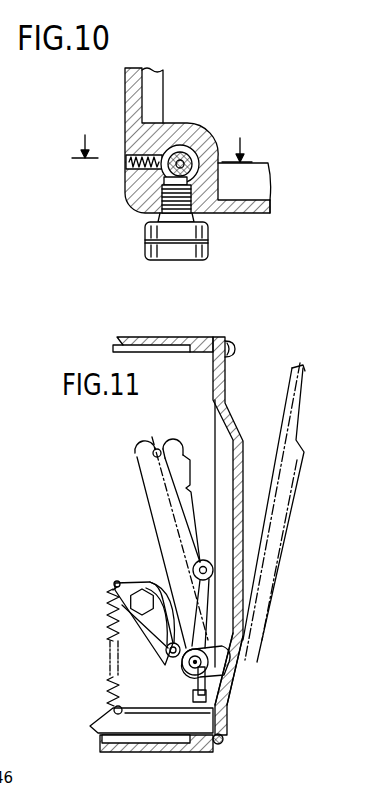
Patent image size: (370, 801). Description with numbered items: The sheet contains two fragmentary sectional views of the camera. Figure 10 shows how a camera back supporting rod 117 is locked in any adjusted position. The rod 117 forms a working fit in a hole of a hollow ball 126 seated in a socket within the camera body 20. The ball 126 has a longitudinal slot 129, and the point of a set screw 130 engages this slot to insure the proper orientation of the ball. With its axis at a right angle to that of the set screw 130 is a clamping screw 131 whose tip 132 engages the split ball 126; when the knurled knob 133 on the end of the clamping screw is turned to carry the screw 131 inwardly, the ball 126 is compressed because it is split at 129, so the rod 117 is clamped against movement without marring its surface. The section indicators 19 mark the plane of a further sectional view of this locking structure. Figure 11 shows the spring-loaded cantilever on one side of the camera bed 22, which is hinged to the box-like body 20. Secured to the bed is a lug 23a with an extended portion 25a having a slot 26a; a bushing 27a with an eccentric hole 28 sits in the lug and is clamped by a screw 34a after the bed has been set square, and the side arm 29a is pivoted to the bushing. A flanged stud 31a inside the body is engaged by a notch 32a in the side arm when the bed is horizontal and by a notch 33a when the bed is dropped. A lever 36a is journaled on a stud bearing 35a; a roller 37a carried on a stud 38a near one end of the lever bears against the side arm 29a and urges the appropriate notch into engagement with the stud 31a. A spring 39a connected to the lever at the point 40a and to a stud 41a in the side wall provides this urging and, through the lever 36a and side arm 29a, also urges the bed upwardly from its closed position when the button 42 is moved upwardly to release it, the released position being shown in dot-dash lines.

In FIG. 10, the section line indicator 19 is at (162, 160).
In FIG. 10, the camera body 20 is at (264, 214).
In FIG. 11, the camera body 20 is at (196, 340).
In FIG. 11, the camera bed 22 is at (228, 407).
In FIG. 11, the button 42 is at (236, 349).
In FIG. 10, the rod 117 is at (181, 150).
In FIG. 10, the hollow ball 126 is at (188, 149).
In FIG. 10, the longitudinal slot 129 is at (152, 147).
In FIG. 10, the set screw 130 is at (130, 161).
In FIG. 10, the clamping screw 131 is at (165, 205).
In FIG. 10, the tip 132 is at (166, 181).
In FIG. 10, the knurled knob 133 is at (210, 248).
In FIG. 11, the lug 23a is at (198, 688).
In FIG. 11, the extended portion 25a is at (216, 690).
In FIG. 11, the slot 26a is at (224, 734).
In FIG. 11, the bushing 27a is at (207, 658).
In FIG. 11, the eccentric hole 28 is at (210, 672).
In FIG. 11, the side arm 29a is at (172, 518).
In FIG. 11, the flanged stud 31a is at (215, 570).
In FIG. 11, the notch 32a is at (188, 490).
In FIG. 11, the notch 33a is at (158, 462).
In FIG. 11, the screw 34a is at (206, 708).
In FIG. 11, the stud bearing 35a is at (143, 589).
In FIG. 11, the lever 36a is at (170, 657).
In FIG. 11, the roller 37a is at (170, 604).
In FIG. 11, the stud 38a is at (190, 670).
In FIG. 11, the spring 39a is at (112, 640).
In FIG. 11, the point 40a is at (114, 586).
In FIG. 11, the stud 41a is at (114, 709).